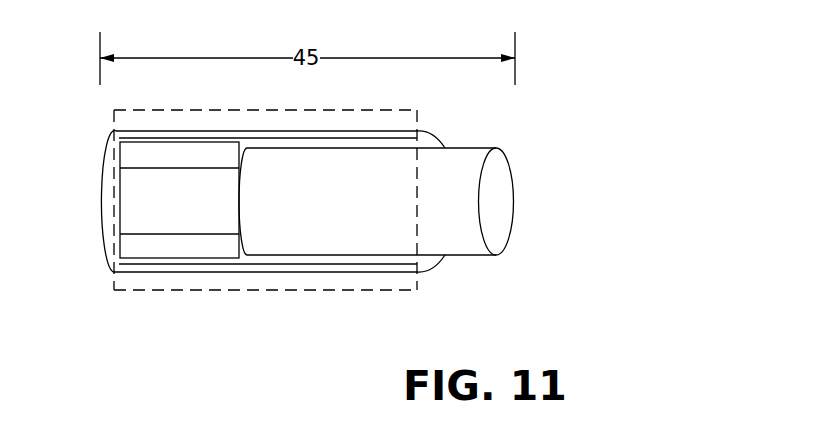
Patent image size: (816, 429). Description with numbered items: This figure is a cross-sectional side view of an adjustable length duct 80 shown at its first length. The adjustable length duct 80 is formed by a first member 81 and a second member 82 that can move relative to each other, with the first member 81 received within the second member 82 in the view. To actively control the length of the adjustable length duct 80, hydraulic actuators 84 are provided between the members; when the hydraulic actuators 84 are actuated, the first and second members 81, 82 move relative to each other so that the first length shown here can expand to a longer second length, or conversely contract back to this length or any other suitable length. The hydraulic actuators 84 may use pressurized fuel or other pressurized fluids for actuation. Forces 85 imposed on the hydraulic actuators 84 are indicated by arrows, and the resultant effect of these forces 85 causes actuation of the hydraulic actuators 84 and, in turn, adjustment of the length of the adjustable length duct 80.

The adjustable length duct 80 is at (614, 209).
The first member 81 is at (455, 170).
The second member 82 is at (398, 143).
The hydraulic actuator 84 is at (182, 149).
The force 85 is at (73, 85).